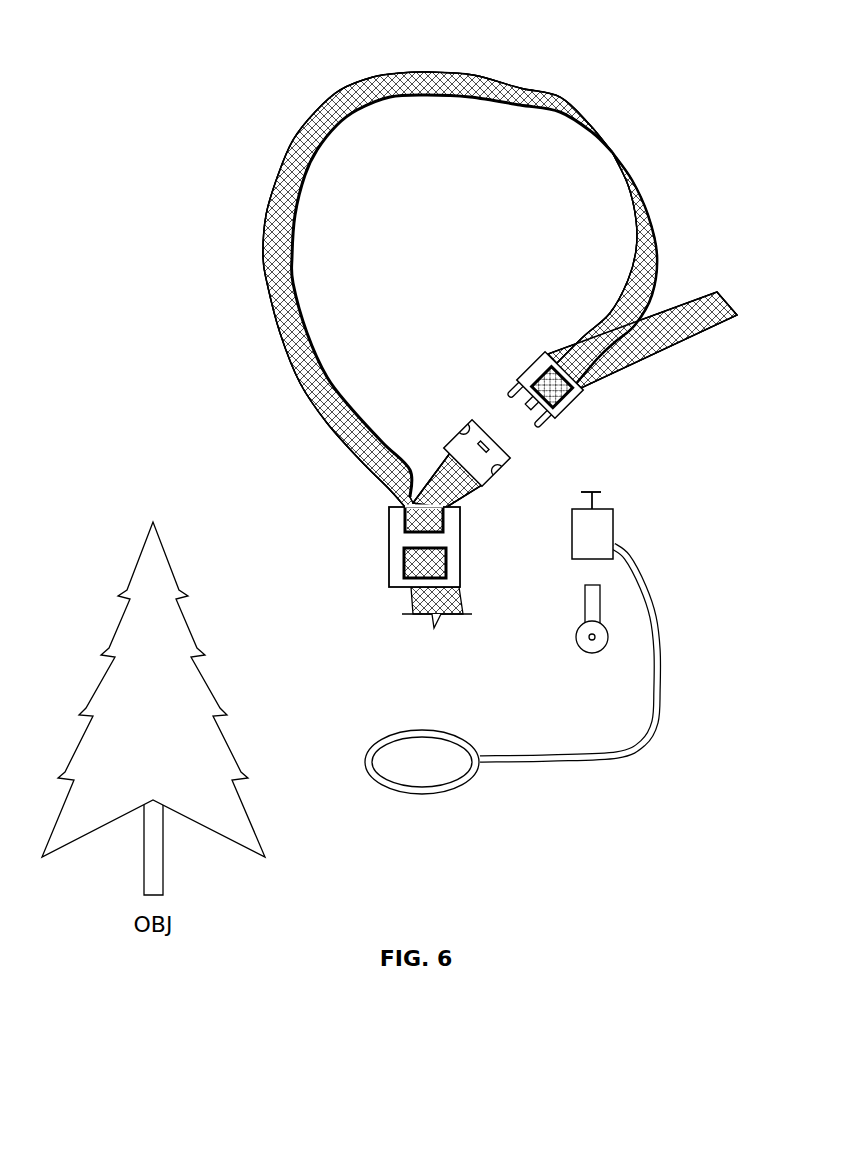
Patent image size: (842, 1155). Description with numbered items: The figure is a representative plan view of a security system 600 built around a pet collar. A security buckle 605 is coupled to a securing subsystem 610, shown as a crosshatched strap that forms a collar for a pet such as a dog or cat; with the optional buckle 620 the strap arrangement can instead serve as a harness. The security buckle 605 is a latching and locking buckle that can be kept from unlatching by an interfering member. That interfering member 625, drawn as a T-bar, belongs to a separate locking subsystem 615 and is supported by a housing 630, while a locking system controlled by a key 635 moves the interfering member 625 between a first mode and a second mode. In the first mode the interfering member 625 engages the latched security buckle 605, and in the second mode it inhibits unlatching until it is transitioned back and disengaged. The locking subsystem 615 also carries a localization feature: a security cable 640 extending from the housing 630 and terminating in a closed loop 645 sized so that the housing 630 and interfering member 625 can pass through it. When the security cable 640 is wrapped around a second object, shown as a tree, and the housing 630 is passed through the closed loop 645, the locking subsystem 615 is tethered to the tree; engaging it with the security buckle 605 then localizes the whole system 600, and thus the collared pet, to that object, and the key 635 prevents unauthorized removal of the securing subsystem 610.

The security system 600 is at (430, 401).
The security buckle 605 is at (540, 345).
The securing subsystem 610 is at (455, 73).
The locking subsystem 615 is at (535, 628).
The buckle 620 is at (389, 537).
The interfering member 625 is at (596, 492).
The housing 630 is at (613, 527).
The key 635 is at (593, 653).
The security cable 640 is at (657, 742).
The closed loop 645 is at (388, 757).